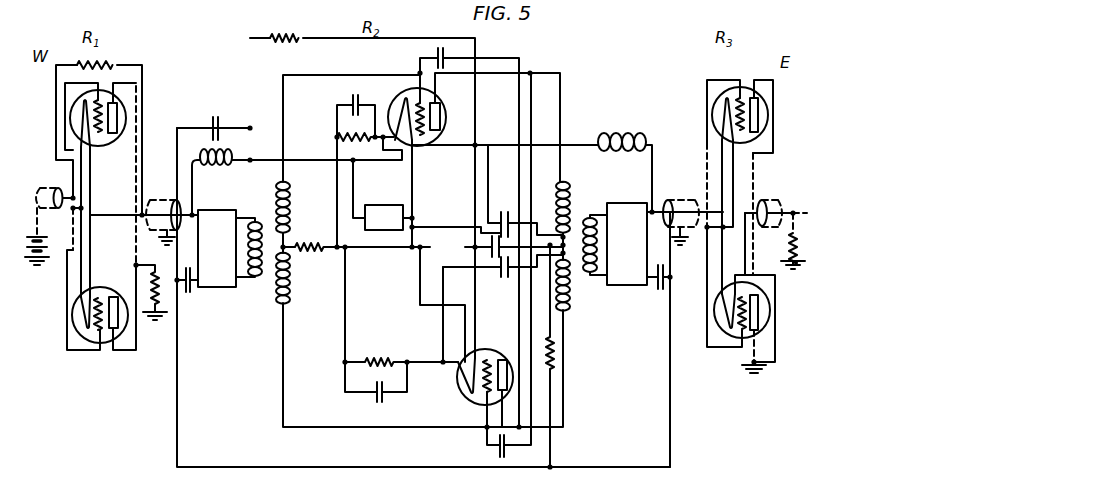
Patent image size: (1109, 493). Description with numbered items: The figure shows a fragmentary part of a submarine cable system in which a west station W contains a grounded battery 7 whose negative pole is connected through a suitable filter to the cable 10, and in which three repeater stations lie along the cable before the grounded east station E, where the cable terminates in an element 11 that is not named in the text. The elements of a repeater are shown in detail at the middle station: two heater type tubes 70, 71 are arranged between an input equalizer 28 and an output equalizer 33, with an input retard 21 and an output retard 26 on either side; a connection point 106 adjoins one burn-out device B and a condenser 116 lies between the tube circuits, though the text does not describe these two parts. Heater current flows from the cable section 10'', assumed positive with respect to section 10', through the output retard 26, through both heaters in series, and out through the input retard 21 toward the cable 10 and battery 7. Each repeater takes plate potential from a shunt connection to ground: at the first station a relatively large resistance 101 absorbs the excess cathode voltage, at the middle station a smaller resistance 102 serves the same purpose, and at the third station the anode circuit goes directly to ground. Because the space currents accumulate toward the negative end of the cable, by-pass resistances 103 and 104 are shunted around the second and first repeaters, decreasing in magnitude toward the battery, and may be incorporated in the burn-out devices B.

The by-pass resistance 104 is at (116, 62).
The cable 10 is at (51, 187).
The grounded battery 7 is at (43, 250).
The cable section 10' is at (163, 206).
The input retard 21 is at (207, 167).
The resistance 101 is at (163, 284).
The input equalizer 28 is at (219, 288).
The by-pass resistance 103 is at (297, 44).
The heater type tube 70 is at (445, 126).
The connection to battery B 106 is at (414, 216).
The condenser 116 is at (495, 264).
The heater type tube 71 is at (460, 391).
The resistance 102 is at (557, 353).
The output retard 26 is at (620, 133).
The output equalizer 33 is at (629, 285).
The cable section 10'' is at (685, 206).
The output transducer / receiver 11 is at (788, 209).